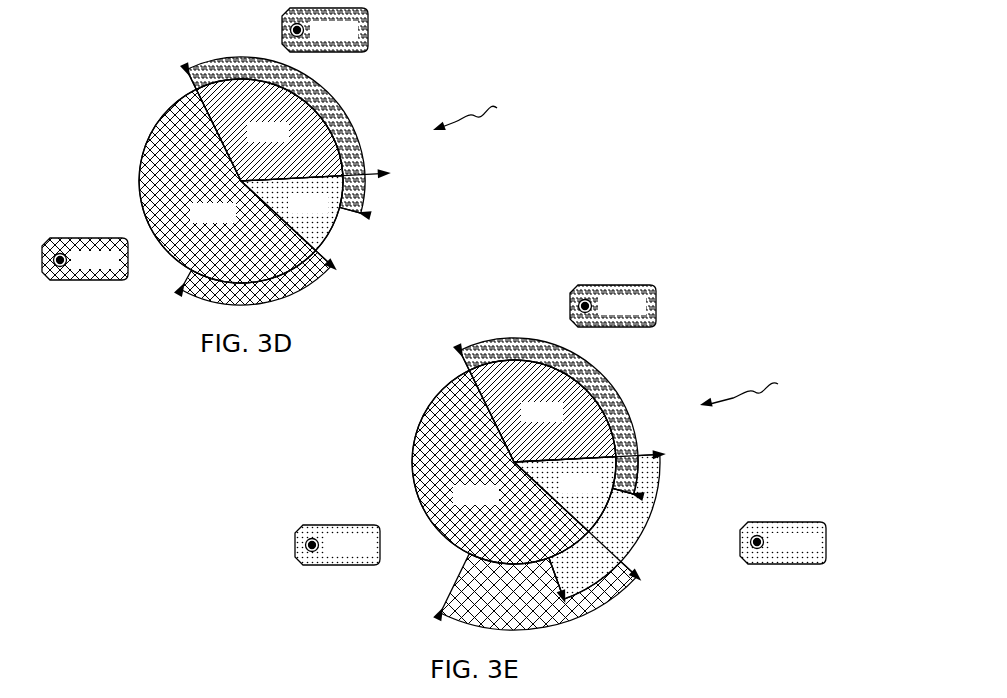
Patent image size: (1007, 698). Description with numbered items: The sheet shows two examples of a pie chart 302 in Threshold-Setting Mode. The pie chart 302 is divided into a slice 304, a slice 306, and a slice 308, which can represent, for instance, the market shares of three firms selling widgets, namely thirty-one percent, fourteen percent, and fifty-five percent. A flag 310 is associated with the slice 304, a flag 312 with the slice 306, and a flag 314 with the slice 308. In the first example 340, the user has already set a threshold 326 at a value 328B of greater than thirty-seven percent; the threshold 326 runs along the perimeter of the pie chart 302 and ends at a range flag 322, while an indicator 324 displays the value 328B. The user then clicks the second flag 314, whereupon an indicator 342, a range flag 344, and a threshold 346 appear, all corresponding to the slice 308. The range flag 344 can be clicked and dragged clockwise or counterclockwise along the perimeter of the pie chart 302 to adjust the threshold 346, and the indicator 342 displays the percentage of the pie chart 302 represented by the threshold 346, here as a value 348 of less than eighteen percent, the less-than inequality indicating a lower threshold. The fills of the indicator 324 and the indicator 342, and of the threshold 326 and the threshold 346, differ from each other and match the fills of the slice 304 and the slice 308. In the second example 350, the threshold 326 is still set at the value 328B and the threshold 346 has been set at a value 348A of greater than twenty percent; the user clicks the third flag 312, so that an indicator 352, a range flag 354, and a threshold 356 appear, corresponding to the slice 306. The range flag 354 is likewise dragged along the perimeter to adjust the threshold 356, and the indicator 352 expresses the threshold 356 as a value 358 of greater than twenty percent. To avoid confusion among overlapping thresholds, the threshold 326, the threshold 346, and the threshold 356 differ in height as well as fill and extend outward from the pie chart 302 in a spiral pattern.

In FIG. 3D, the pie chart 302 is at (255, 263).
In FIG. 3E, the pie chart 302 is at (530, 548).
In FIG. 3D, the slice 304 is at (322, 122).
In FIG. 3E, the slice 304 is at (598, 408).
In FIG. 3D, the slice 306 is at (327, 228).
In FIG. 3E, the slice 306 is at (595, 520).
In FIG. 3D, the slice 308 is at (146, 167).
In FIG. 3E, the slice 308 is at (413, 477).
In FIG. 3D, the flag 310 is at (184, 68).
In FIG. 3E, the flag 310 is at (457, 351).
In FIG. 3D, the flag 312 is at (391, 173).
In FIG. 3E, the flag 312 is at (666, 454).
In FIG. 3D, the flag 314 is at (337, 270).
In FIG. 3E, the flag 314 is at (642, 581).
In FIG. 3D, the range flag 322 is at (370, 213).
In FIG. 3E, the range flag 322 is at (644, 494).
In FIG. 3D, the indicator 324 is at (347, 52).
In FIG. 3E, the indicator 324 is at (656, 300).
In FIG. 3D, the threshold 326 is at (188, 85).
In FIG. 3E, the threshold 326 is at (573, 357).
In FIG. 3D, the value 328B is at (290, 30).
In FIG. 3E, the value 328B is at (578, 306).
In FIG. 3D, the example 340 is at (485, 112).
In FIG. 3D, the indicator 342 is at (90, 280).
In FIG. 3E, the indicator 342 is at (350, 565).
In FIG. 3D, the range flag 344 is at (178, 293).
In FIG. 3E, the range flag 344 is at (438, 612).
In FIG. 3D, the threshold 346 is at (293, 297).
In FIG. 3E, the threshold 346 is at (493, 605).
In FIG. 3D, the value 348 is at (58, 254).
In FIG. 3E, the value 348A is at (312, 538).
In FIG. 3E, the example 350 is at (757, 389).
In FIG. 3E, the indicator 352 is at (800, 564).
In FIG. 3E, the range flag 354 is at (577, 612).
In FIG. 3E, the threshold 356 is at (633, 512).
In FIG. 3E, the value 358 is at (757, 535).